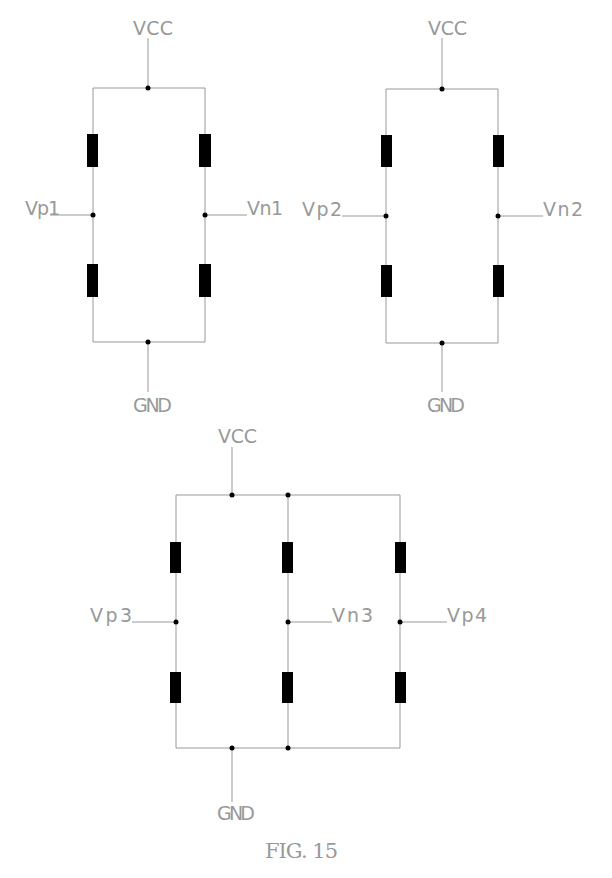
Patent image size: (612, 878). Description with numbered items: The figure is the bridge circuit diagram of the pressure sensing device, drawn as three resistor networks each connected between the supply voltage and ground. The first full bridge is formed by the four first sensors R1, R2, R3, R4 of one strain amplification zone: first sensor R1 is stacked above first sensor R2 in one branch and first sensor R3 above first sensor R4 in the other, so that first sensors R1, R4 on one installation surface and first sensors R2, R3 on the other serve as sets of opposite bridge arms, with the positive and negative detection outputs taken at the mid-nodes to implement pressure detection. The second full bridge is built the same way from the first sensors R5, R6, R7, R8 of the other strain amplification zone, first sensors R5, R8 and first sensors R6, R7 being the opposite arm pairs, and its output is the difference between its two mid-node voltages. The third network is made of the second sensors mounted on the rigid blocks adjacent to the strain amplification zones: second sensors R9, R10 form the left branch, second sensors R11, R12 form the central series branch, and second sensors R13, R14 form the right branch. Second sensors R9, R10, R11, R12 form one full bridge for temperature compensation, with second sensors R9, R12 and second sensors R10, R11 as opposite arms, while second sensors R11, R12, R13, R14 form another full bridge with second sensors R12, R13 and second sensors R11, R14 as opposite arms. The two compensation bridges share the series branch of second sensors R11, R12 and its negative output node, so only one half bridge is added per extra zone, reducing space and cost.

The first sensor R1 is at (81, 150).
The first sensor R2 is at (81, 280).
The first sensor R3 is at (219, 150).
The first sensor R4 is at (219, 280).
The first sensor R5 is at (375, 151).
The first sensor R6 is at (375, 281).
The first sensor R7 is at (513, 151).
The first sensor R8 is at (512, 281).
The second sensor R9 is at (161, 557).
The second sensor R10 is at (159, 687).
The second sensor R11 is at (303, 557).
The second sensor R12 is at (303, 687).
The second sensor R13 is at (417, 557).
The second sensor R14 is at (417, 687).